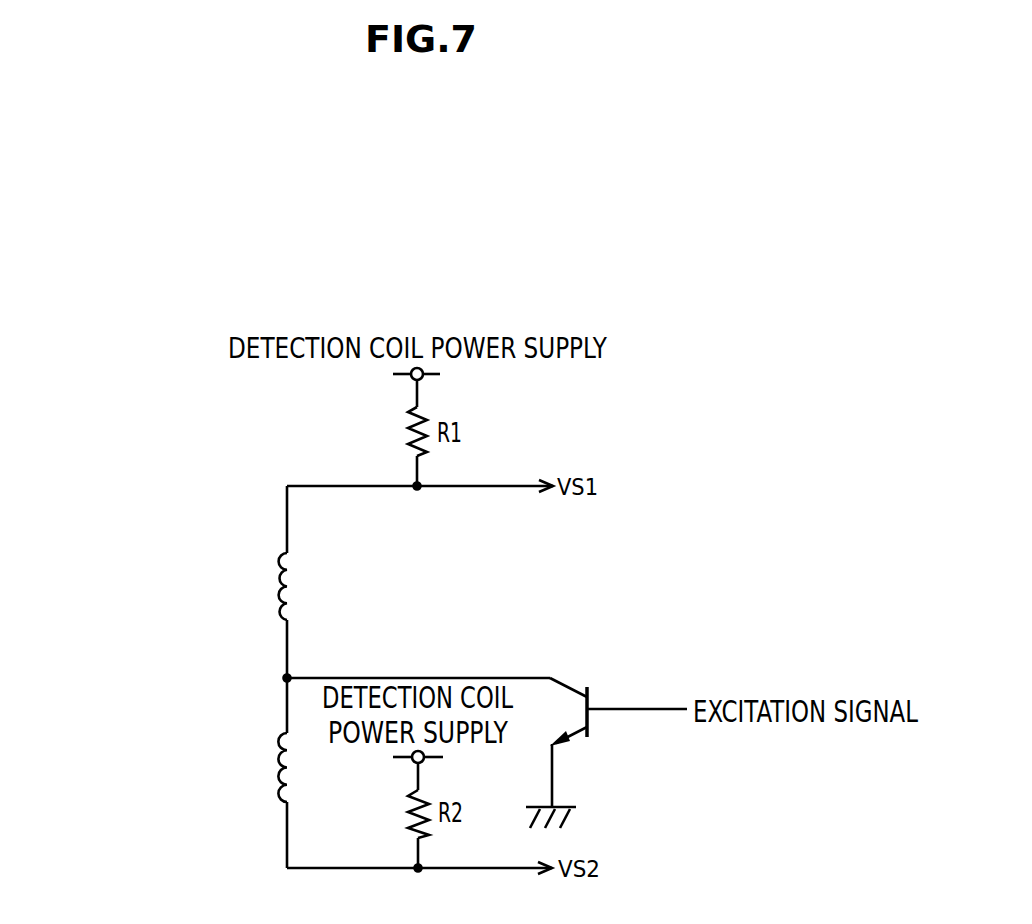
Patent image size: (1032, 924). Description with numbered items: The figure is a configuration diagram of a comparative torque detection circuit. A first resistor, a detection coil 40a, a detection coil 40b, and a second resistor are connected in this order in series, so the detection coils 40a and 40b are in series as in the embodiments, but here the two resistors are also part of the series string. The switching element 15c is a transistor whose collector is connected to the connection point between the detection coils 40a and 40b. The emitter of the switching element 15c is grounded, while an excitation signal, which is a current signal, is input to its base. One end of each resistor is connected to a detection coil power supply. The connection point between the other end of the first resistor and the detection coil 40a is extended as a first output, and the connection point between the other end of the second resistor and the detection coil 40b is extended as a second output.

The detection coil 40a is at (278, 585).
The detection coil 40b is at (278, 767).
The switching element 15c is at (575, 682).